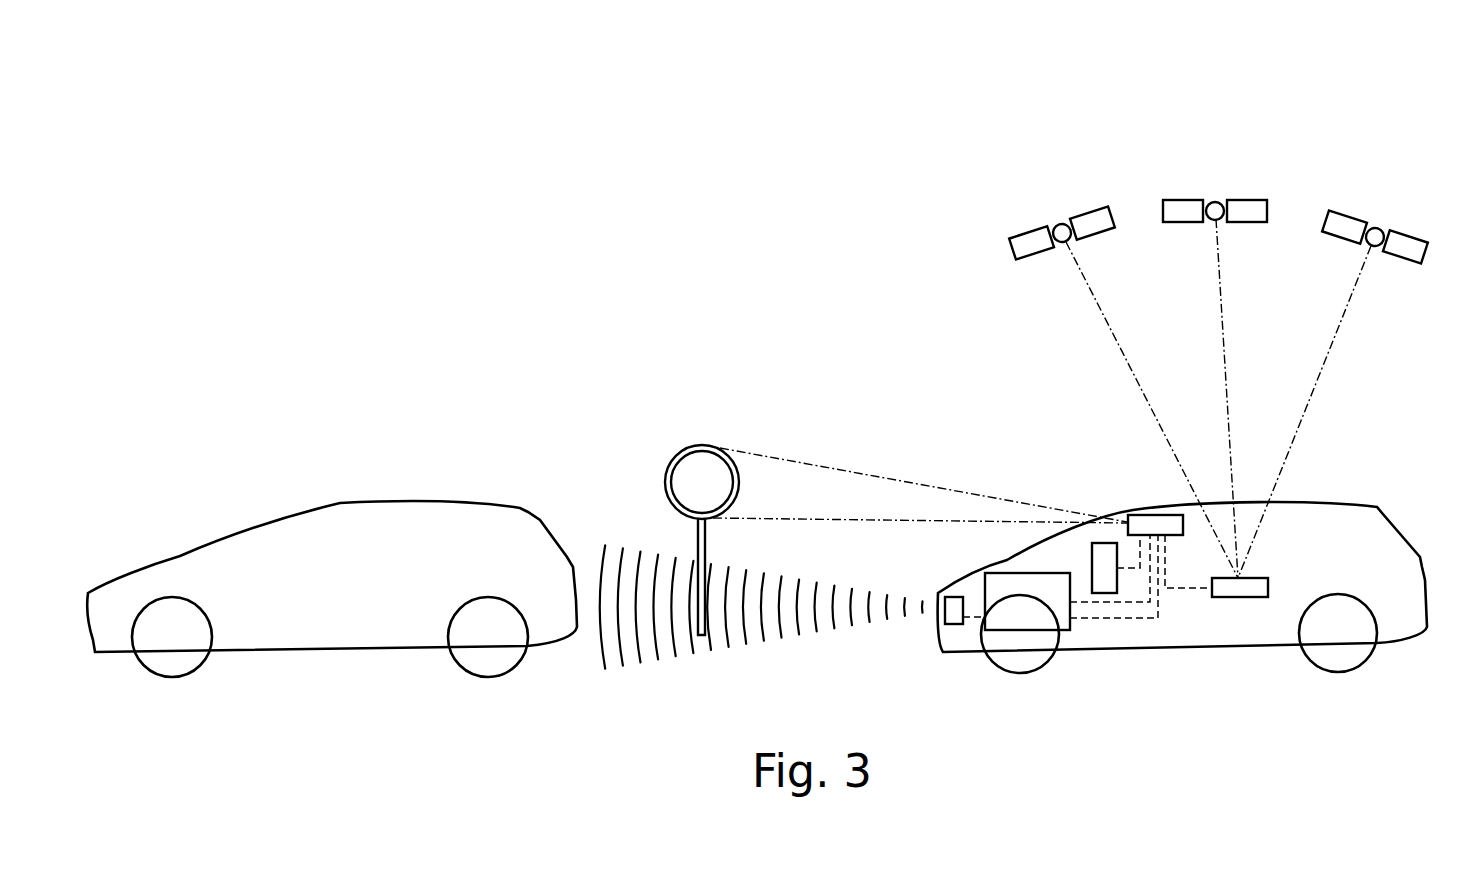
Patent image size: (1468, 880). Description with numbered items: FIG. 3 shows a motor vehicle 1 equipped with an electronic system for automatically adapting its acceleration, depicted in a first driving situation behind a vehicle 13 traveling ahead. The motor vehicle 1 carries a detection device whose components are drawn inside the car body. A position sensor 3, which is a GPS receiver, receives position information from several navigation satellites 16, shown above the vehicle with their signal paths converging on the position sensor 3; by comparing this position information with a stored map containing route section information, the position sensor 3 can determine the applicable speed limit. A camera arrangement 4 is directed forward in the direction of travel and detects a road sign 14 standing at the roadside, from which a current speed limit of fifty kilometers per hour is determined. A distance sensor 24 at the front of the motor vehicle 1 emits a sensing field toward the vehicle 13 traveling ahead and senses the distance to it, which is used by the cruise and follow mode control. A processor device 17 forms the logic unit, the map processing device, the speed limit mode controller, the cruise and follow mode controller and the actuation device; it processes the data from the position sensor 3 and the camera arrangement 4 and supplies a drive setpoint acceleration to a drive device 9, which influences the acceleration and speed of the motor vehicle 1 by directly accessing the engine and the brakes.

The motor vehicle 1 is at (1342, 500).
The position sensor 3 is at (1268, 588).
The camera arrangement 4 is at (1157, 515).
The drive device 9 is at (1028, 573).
The vehicle traveling ahead 13 is at (417, 497).
The road sign 14 is at (702, 460).
The navigation satellites 16 is at (1065, 207).
The processor device 17 is at (1105, 595).
The distance sensor 24 is at (953, 612).